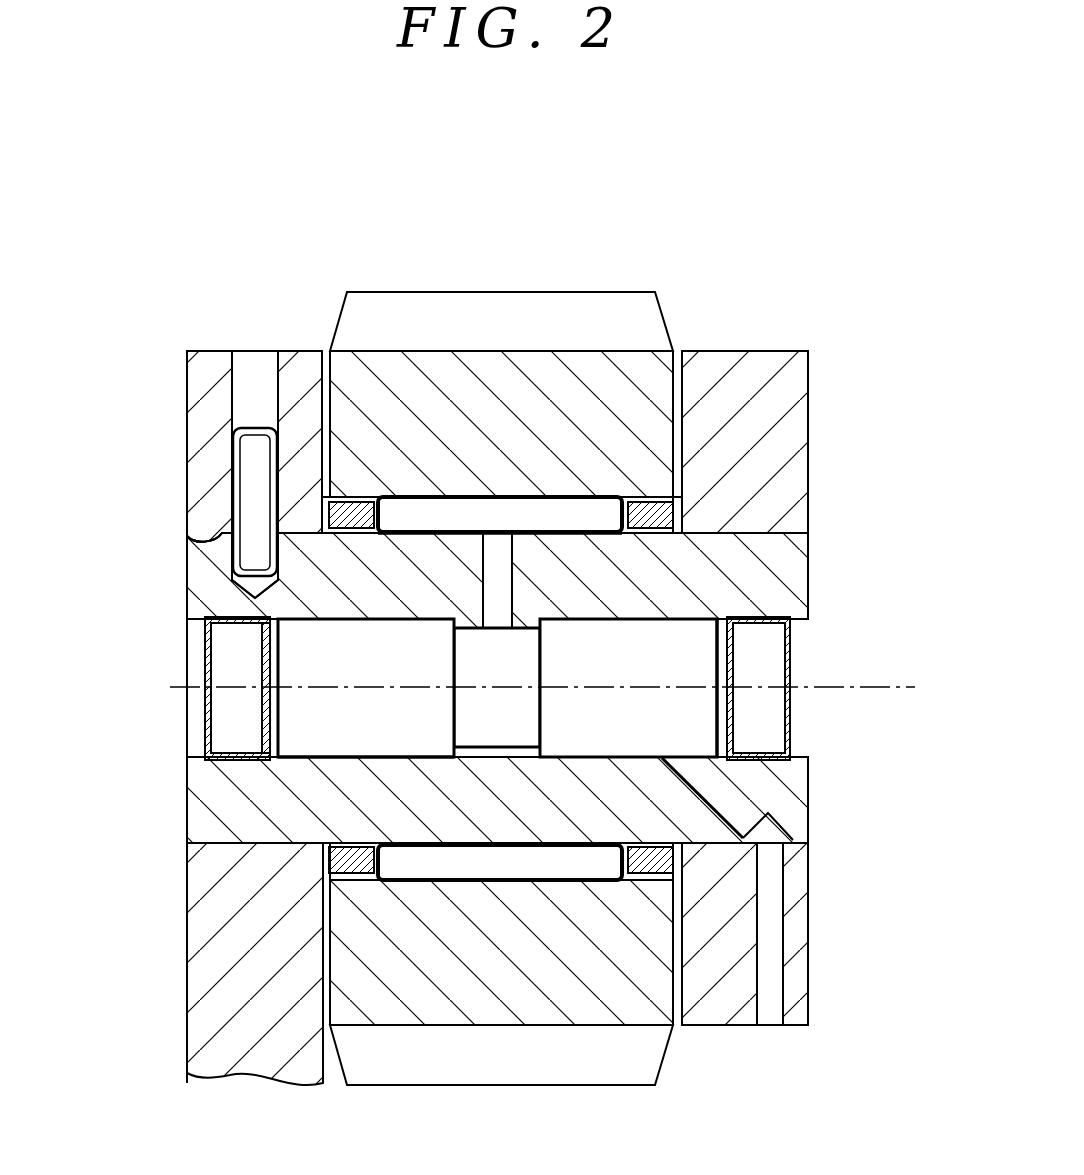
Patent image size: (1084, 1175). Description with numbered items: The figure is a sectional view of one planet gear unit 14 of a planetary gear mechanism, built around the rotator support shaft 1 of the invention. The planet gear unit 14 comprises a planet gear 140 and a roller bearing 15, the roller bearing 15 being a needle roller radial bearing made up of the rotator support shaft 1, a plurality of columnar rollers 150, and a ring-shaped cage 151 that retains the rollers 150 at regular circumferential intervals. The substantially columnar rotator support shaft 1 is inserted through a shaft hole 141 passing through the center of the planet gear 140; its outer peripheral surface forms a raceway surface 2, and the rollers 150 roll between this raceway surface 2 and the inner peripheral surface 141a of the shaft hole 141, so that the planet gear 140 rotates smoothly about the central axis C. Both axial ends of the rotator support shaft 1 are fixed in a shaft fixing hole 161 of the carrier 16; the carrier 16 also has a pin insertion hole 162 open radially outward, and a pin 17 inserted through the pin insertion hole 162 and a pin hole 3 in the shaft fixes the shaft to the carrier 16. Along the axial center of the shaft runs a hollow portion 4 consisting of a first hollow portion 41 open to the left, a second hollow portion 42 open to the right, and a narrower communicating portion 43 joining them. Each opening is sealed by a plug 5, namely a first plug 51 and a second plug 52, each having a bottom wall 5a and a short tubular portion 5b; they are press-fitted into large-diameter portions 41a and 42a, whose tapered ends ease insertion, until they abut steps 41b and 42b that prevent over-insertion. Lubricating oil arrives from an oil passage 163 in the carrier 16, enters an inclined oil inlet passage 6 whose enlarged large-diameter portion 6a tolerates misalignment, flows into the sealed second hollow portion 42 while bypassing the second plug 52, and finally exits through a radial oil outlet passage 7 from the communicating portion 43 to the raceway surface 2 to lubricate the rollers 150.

The rotator support shaft 1 is at (183, 595).
The raceway surface 2 is at (519, 527).
The pin hole 3 is at (252, 582).
The hollow portion 4 is at (498, 854).
The plug 5 is at (178, 676).
The bottom wall 5a is at (262, 656).
The tubular portion 5b is at (215, 675).
The oil inlet passage 6 is at (735, 807).
The large-diameter portion 6a is at (770, 834).
The oil outlet passage 7 is at (499, 560).
The planet gear unit 14 is at (171, 318).
The roller bearing 15 is at (647, 671).
The carrier 16 is at (792, 350).
The pin 17 is at (248, 461).
The first hollow portion 41 is at (337, 747).
The large-diameter portion 41a is at (243, 755).
The step 41b is at (316, 738).
The second hollow portion 42 is at (598, 727).
The large-diameter portion 42a is at (762, 624).
The step 42b is at (717, 620).
The communicating portion 43 is at (488, 727).
The first plug 51 is at (207, 722).
The second plug 52 is at (818, 688).
The planet gear 140 is at (655, 292).
The shaft hole 141 is at (340, 497).
The inner peripheral surface 141a is at (657, 503).
The roller 150 is at (600, 517).
The cage 151 is at (662, 512).
The shaft fixing hole 161 is at (186, 540).
The pin insertion hole 162 is at (258, 370).
The oil passage 163 is at (770, 982).
The central axis C is at (553, 661).